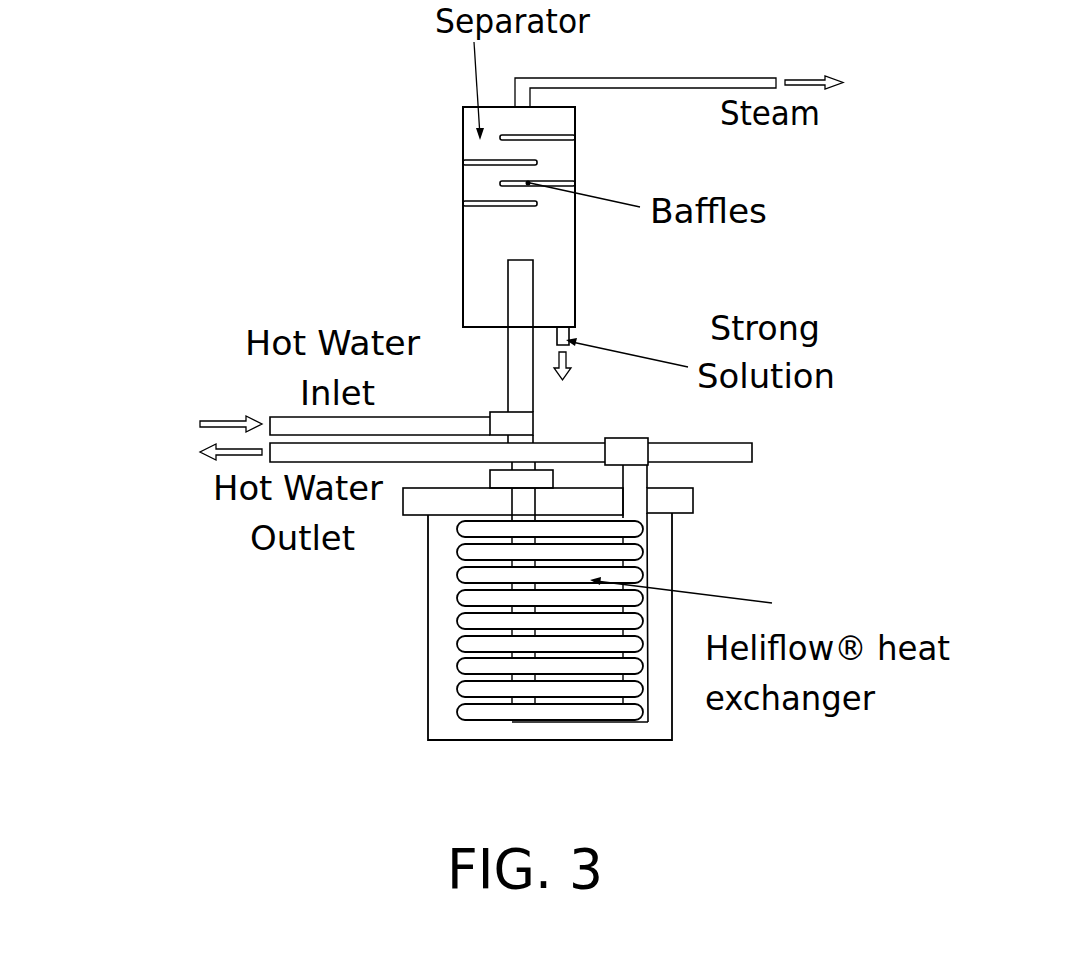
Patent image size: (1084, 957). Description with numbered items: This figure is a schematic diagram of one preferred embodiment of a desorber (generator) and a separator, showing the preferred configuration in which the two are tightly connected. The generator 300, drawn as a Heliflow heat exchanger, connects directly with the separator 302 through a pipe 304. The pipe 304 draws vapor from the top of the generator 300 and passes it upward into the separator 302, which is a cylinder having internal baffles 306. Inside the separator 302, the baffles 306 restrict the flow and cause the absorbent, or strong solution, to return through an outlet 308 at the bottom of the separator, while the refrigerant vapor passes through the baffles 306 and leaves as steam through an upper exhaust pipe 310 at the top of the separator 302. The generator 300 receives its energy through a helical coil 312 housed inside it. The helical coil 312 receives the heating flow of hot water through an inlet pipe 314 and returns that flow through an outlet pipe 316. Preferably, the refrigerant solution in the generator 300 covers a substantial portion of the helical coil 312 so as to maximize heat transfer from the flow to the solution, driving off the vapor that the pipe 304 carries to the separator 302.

The generator 300 is at (673, 569).
The separator 302 is at (463, 108).
The pipe 304 is at (507, 362).
The baffles 306 is at (483, 158).
The outlet 308 is at (570, 331).
The upper exhaust pipe 310 is at (651, 77).
The helical coil 312 is at (460, 710).
The inlet pipe 314 is at (272, 417).
The outlet pipe 316 is at (273, 463).